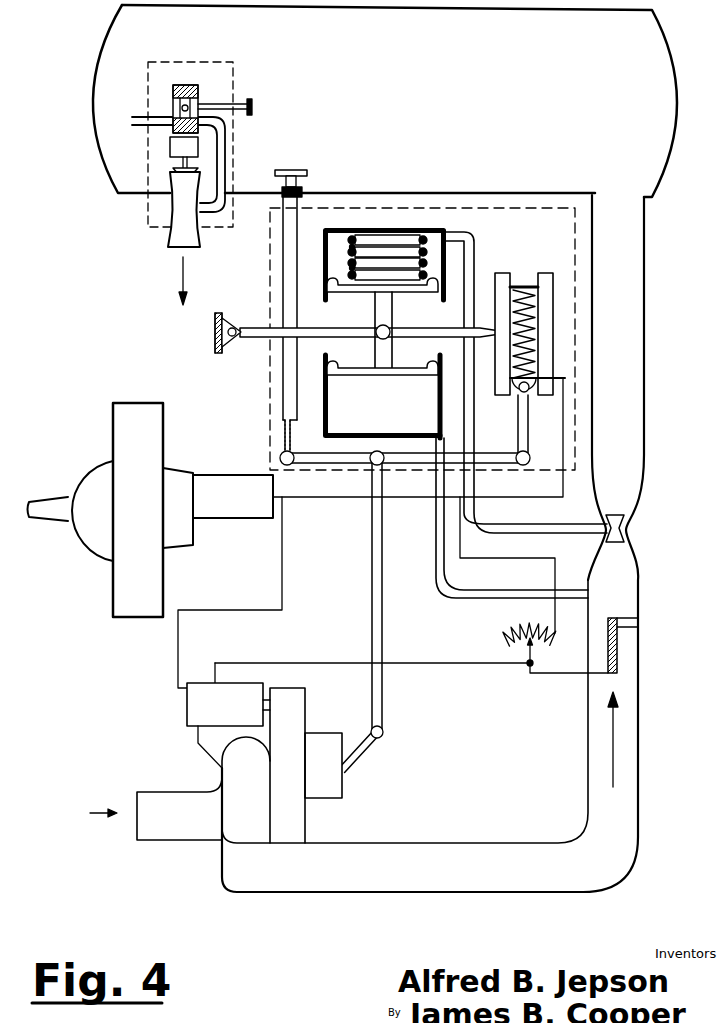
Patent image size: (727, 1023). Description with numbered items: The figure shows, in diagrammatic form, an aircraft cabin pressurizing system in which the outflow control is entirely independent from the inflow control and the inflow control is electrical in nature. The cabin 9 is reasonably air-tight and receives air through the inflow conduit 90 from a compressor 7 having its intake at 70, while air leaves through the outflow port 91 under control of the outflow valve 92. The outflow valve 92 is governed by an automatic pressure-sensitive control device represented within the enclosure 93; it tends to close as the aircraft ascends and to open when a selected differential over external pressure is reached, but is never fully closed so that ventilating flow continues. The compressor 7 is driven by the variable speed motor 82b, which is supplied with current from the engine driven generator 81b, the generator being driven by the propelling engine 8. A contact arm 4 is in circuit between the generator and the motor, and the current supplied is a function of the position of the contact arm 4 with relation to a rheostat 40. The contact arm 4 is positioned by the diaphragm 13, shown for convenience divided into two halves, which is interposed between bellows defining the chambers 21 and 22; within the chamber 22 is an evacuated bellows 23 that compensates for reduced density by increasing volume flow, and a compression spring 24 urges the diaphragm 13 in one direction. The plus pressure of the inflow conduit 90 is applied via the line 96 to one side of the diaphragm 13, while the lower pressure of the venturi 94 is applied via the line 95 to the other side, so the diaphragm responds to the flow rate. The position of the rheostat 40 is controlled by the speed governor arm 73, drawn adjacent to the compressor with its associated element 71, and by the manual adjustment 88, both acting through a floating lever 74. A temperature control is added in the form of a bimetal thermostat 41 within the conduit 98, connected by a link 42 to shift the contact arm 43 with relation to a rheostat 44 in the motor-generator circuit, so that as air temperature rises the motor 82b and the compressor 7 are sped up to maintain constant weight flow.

The cabin 9 is at (525, 10).
The inflow conduit 90 is at (628, 333).
The outflow valve 92 is at (167, 173).
The enclosure 93 is at (172, 62).
The conduit 98 is at (200, 97).
The outflow port 91 is at (175, 240).
The manual adjustment 88 is at (291, 168).
The minus pressure line 95 is at (540, 533).
The venturi 94 is at (622, 528).
The plus pressure line 96 is at (490, 597).
The chamber 22 is at (427, 252).
The compression spring 24 is at (350, 247).
The evacuated bellows 23 is at (350, 267).
The chamber 21 is at (347, 395).
The contact arm 4 is at (447, 303).
The diaphragm 13 is at (357, 363).
The rheostat 40 is at (523, 287).
The floating lever 74 is at (333, 463).
The speed governor arm 73 is at (360, 742).
The damper box 71 is at (330, 775).
The propelling engine 8 is at (103, 470).
The engine driven generator 81b is at (250, 452).
The variable speed motor 82b is at (210, 692).
The compressor 7 is at (235, 830).
The intake 70 is at (150, 830).
The contact arm 43 is at (533, 652).
The rheostat 44 is at (507, 640).
The link 42 is at (565, 675).
The bimetal thermostat 41 is at (618, 655).